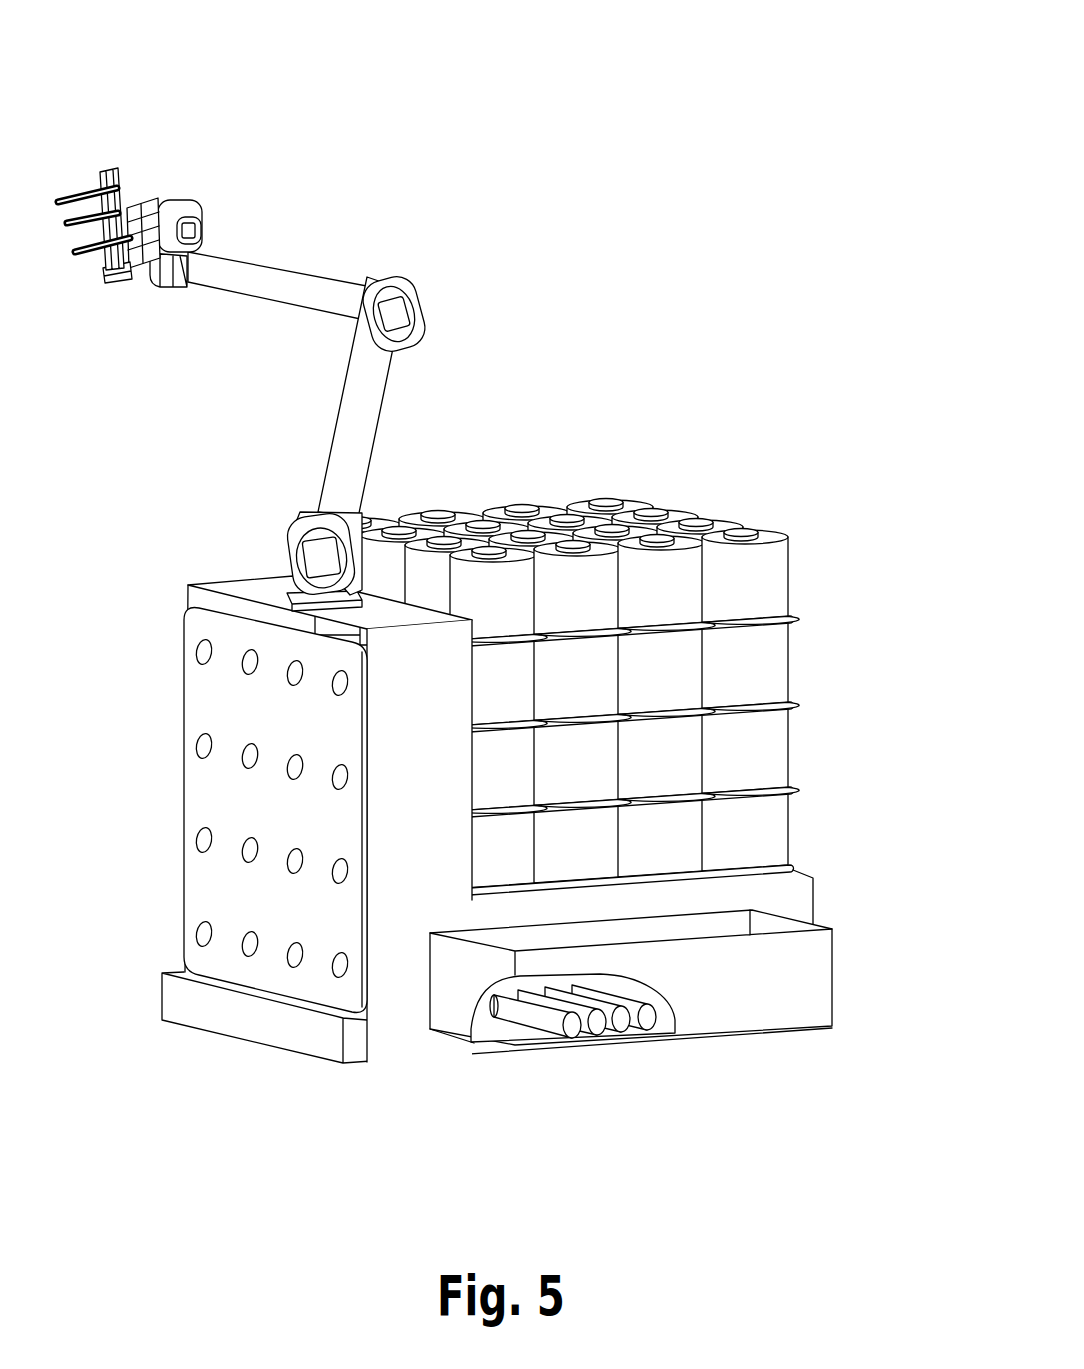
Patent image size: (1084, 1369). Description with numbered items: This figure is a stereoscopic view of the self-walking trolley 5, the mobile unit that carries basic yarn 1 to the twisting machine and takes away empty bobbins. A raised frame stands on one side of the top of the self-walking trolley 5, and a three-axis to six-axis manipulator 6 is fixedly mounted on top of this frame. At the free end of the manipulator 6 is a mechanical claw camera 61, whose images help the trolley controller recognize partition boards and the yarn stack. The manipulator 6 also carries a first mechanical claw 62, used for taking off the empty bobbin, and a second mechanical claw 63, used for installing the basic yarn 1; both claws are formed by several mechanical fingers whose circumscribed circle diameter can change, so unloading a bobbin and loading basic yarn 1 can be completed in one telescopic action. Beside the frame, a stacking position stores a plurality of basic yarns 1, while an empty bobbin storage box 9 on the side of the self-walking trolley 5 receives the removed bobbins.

The basic yarn 1 is at (755, 578).
The self-walking trolley 5 is at (412, 693).
The manipulator 6 is at (365, 397).
The mechanical claw camera 61 is at (202, 236).
The first mechanical claw 62 is at (135, 203).
The second mechanical claw 63 is at (115, 175).
The empty bobbin storage box 9 is at (738, 985).